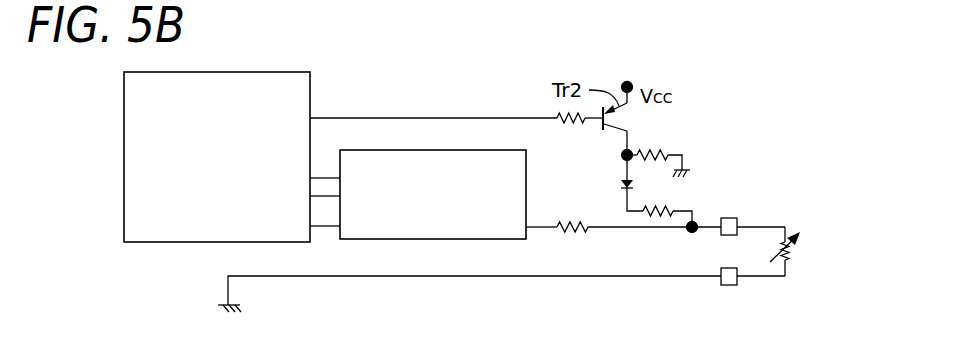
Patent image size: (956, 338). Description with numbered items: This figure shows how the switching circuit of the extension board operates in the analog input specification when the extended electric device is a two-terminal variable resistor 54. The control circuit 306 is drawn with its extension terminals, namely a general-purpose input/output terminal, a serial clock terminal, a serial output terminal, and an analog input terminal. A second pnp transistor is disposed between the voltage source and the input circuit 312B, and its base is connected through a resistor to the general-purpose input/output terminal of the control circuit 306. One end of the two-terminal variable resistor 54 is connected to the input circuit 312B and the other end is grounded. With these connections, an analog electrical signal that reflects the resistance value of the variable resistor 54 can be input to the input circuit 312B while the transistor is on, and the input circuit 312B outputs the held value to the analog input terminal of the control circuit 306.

The control circuit 306 is at (248, 72).
The input circuit 312B is at (445, 239).
The two-terminal variable resistor 54 is at (798, 247).